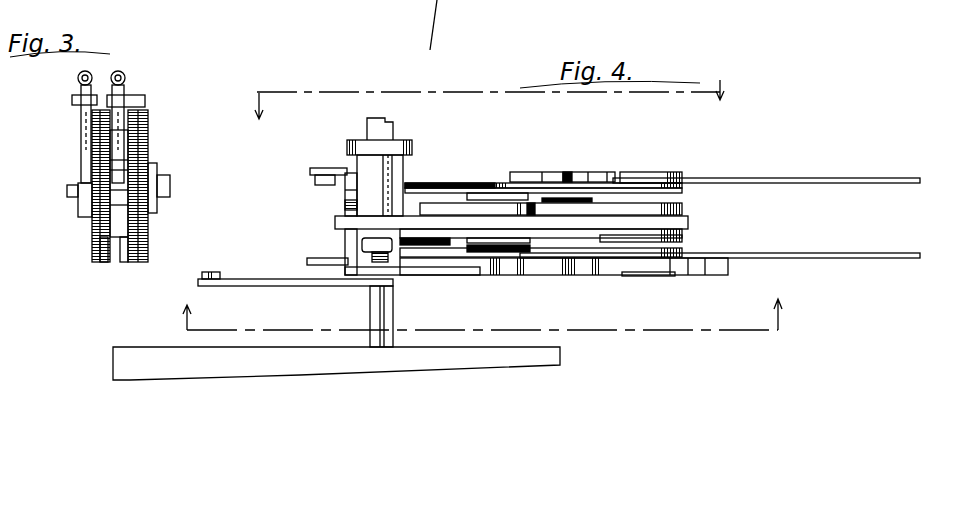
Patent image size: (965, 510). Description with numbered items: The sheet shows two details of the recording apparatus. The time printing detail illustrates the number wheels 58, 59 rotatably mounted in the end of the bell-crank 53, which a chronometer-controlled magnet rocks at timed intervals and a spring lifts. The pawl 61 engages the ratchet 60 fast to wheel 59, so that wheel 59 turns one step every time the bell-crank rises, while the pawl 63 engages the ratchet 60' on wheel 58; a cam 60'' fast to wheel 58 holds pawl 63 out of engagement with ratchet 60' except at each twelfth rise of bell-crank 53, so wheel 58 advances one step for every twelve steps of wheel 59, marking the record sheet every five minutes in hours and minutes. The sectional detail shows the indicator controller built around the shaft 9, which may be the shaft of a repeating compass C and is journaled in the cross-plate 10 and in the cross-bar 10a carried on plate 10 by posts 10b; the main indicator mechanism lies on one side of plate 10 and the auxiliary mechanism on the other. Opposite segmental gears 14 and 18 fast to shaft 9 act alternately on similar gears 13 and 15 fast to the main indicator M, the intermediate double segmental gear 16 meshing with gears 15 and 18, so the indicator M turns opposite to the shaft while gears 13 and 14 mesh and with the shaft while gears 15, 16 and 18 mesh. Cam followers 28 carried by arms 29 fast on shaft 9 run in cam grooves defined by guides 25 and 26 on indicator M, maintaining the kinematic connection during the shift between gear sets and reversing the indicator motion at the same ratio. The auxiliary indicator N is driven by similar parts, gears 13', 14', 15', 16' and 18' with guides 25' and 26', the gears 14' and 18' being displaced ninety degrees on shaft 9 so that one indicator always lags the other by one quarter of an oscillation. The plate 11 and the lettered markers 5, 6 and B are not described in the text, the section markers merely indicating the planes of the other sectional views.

In FIG. 4, the shaft 9 is at (400, 315).
In FIG. 4, the cross-plate 10 is at (680, 223).
In FIG. 4, the cross-bar 10a is at (410, 140).
In FIG. 4, the posts 10b is at (405, 164).
In FIG. 4, the plate 11 is at (655, 174).
In FIG. 4, the segmental gear 13 is at (543, 152).
In FIG. 4, the segmental gear 13' is at (541, 279).
In FIG. 4, the segmental gear 14 is at (543, 168).
In FIG. 4, the segmental gear 14' is at (327, 286).
In FIG. 4, the segmental gear 15 is at (551, 177).
In FIG. 4, the segmental gear 15' is at (574, 275).
In FIG. 4, the intermediate double segmental gear 16 is at (529, 171).
In FIG. 4, the intermediate double segmental gear 16' is at (541, 270).
In FIG. 4, the segmental gear 18 is at (331, 198).
In FIG. 4, the segmental gear 18' is at (342, 252).
In FIG. 4, the guide 25 is at (588, 161).
In FIG. 4, the guide 25' is at (617, 284).
In FIG. 4, the guide 26 is at (562, 147).
In FIG. 4, the guide 26' is at (536, 287).
In FIG. 4, the cam follower 28 is at (216, 272).
In FIG. 4, the arm 29 is at (328, 168).
In FIG. 3, the bell-crank 53 is at (78, 192).
In FIG. 3, the number wheel 58 is at (148, 250).
In FIG. 3, the number wheel 59 is at (97, 250).
In FIG. 3, the ratchet 60 is at (81, 188).
In FIG. 3, the ratchet 60' is at (145, 265).
In FIG. 3, the cam 60'' is at (94, 273).
In FIG. 3, the pawl 61 is at (86, 110).
In FIG. 3, the pawl 63 is at (124, 112).
In FIG. 4, the section line 5- 5 is at (488, 112).
In FIG. 4, the section line 6- 6 is at (481, 305).
In FIG. 4, the arm B is at (436, 32).
In FIG. 4, the repeating compass C is at (165, 355).
In FIG. 4, the main indicator M is at (748, 181).
In FIG. 4, the auxiliary indicator N is at (770, 257).